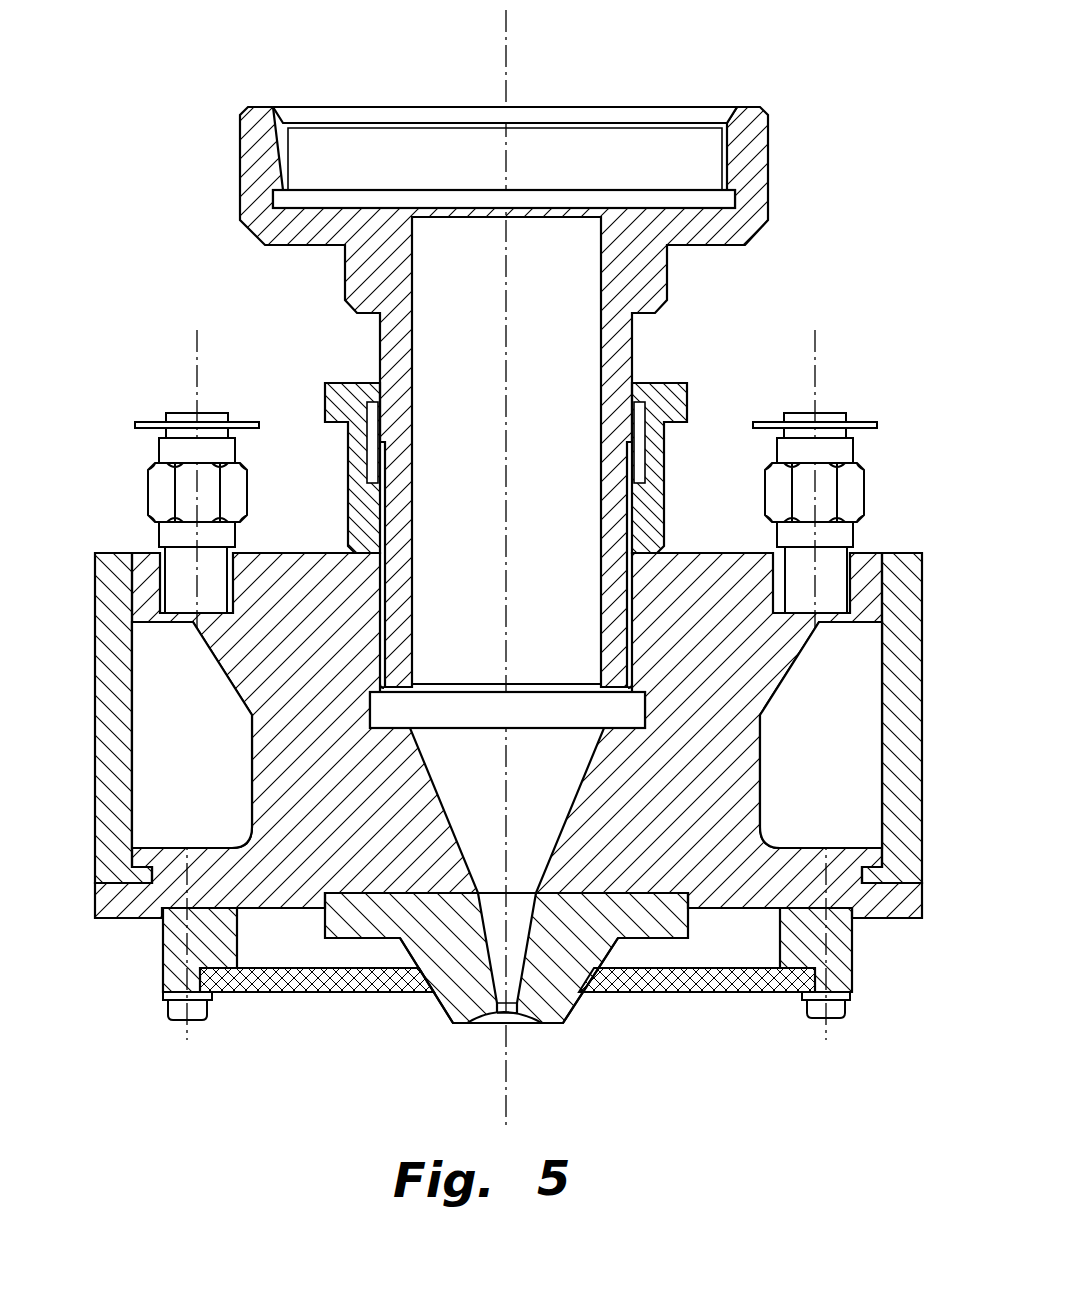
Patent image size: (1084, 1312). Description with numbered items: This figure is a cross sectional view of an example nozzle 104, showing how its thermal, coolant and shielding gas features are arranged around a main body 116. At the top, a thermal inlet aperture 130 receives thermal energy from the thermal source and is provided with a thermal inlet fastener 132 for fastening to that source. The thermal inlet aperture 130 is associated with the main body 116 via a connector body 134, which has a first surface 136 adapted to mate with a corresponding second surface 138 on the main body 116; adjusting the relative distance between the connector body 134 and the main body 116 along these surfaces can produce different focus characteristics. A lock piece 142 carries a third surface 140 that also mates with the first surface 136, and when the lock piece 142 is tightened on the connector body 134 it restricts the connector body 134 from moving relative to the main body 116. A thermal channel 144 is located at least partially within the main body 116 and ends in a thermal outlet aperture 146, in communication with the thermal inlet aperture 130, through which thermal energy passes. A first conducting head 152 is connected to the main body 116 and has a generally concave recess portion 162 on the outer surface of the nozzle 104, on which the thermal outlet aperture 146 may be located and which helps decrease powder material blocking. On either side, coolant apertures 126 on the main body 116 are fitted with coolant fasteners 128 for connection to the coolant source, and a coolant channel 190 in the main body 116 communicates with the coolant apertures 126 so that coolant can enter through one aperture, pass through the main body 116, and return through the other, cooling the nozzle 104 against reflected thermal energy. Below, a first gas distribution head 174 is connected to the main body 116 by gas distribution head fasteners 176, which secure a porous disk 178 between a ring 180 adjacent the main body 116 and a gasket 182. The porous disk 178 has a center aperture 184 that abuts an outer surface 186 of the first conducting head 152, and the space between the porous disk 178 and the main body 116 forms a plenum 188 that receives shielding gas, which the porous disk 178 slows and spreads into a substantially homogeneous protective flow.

The nozzle 104 is at (251, 58).
The main body 116 is at (110, 553).
The coolant aperture 126 is at (172, 412).
The coolant fastener 128 is at (160, 450).
The thermal inlet aperture 130 is at (562, 105).
The thermal inlet fastener 132 is at (700, 133).
The connector body 134 is at (750, 130).
The first surface 136 is at (628, 590).
The second surface 138 is at (632, 642).
The third surface 140 is at (630, 487).
The lock piece 142 is at (665, 385).
The thermal channel 144 is at (445, 815).
The thermal outlet aperture 146 is at (505, 1012).
The first conducting head 152 is at (583, 1030).
The recess portion 162 is at (530, 1023).
The first gas distribution head 174 is at (160, 953).
The gas distribution head fastener 176 is at (165, 1010).
The porous disk 178 is at (243, 993).
The ring 180 is at (775, 930).
The gasket 182 is at (850, 993).
The center aperture 184 is at (420, 975).
The outer surface 186 is at (392, 945).
The plenum 188 is at (303, 950).
The coolant channel 190 is at (775, 790).